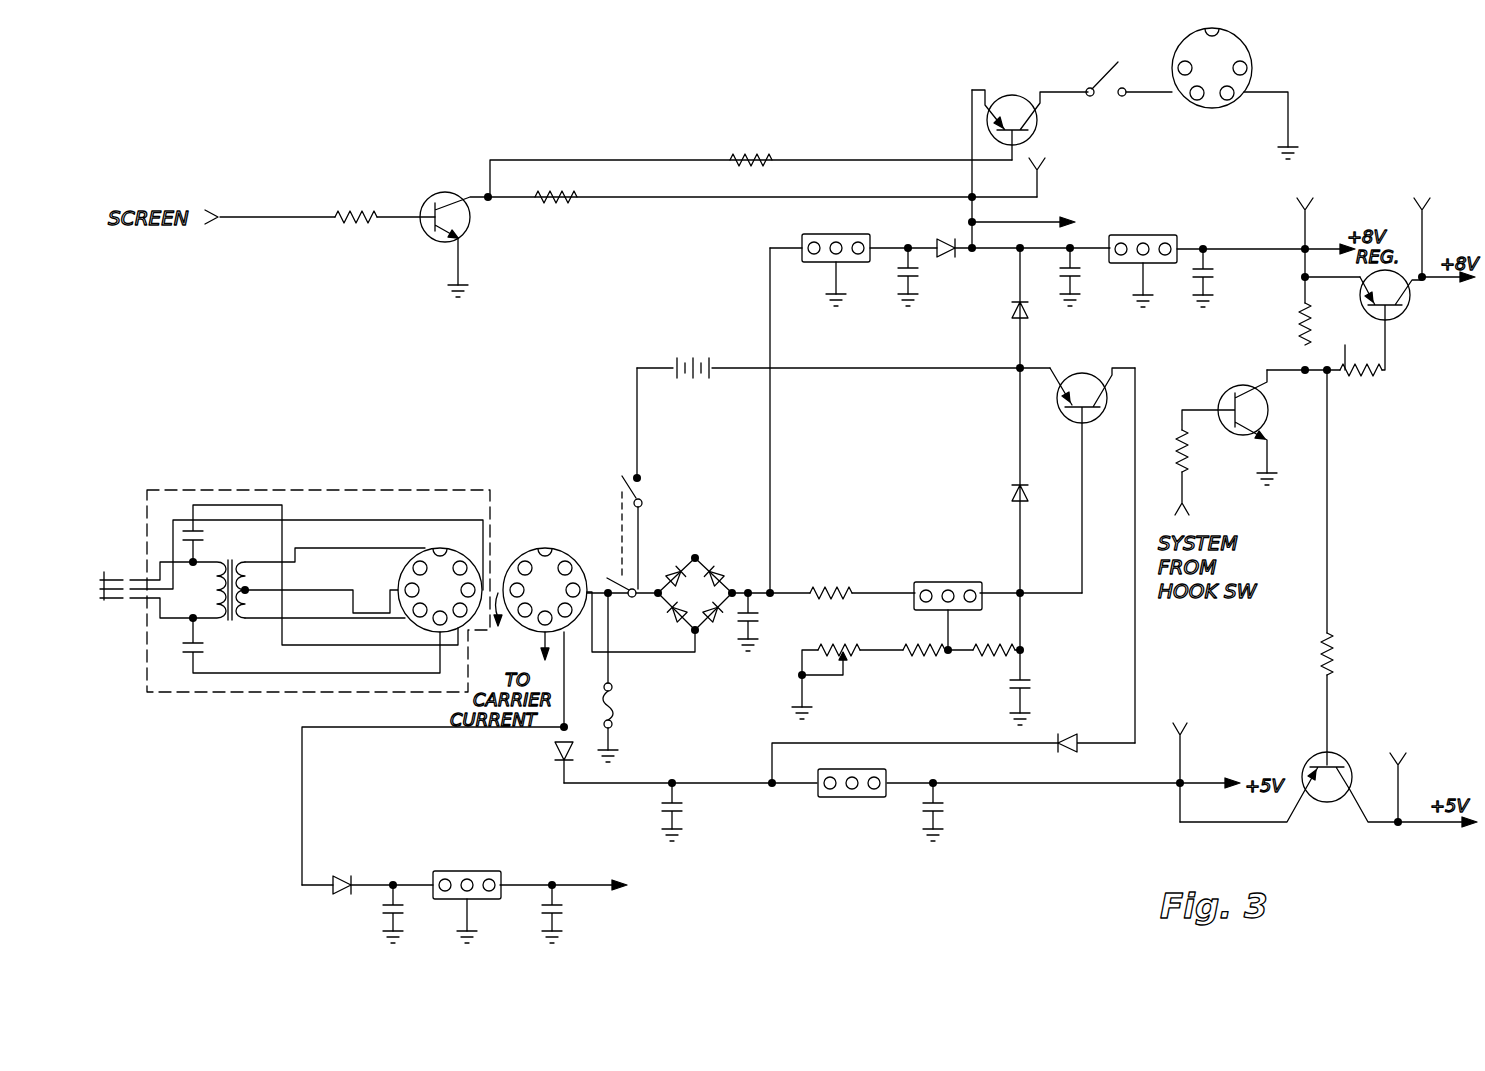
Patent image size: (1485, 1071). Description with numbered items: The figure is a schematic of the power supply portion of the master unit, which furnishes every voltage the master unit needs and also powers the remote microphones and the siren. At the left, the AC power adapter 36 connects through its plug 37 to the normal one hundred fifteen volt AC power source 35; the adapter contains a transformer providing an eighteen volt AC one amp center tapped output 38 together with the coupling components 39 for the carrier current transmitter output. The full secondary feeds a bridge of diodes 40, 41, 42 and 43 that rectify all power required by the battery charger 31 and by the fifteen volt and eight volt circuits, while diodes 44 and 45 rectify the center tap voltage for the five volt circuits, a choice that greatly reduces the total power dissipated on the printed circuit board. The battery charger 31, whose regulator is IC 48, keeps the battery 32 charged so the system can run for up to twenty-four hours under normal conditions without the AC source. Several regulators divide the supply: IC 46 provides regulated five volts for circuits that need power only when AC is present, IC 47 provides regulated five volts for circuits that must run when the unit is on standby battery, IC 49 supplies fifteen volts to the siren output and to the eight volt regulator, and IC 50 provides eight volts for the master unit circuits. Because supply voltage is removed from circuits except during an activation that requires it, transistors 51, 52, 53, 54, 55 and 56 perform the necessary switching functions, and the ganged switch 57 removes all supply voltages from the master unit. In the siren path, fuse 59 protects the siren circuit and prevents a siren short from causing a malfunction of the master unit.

The battery charger 31 is at (1045, 415).
The battery 32 is at (694, 357).
The 115 VAC power source 35 is at (108, 570).
The AC power adapter 36 is at (470, 490).
The plug 37 is at (135, 612).
The center tapped output 38 is at (572, 635).
The coupling components 39 is at (530, 635).
The diode 40 is at (674, 568).
The diode 41 is at (705, 568).
The diode 42 is at (720, 622).
The diode 43 is at (665, 615).
The diode 44 is at (554, 747).
The diode 45 is at (338, 878).
The IC 46 is at (458, 858).
The IC 47 is at (848, 797).
The IC 48 is at (925, 582).
The IC 49 is at (866, 234).
The IC 50 is at (1134, 235).
The transistor 51 is at (470, 235).
The transistor 52 is at (1022, 100).
The transistor 53 is at (1079, 372).
The transistor 54 is at (1268, 415).
The transistor 55 is at (1410, 308).
The transistor 56 is at (1348, 757).
The switch 57 is at (646, 496).
The fuse 59 is at (1118, 62).